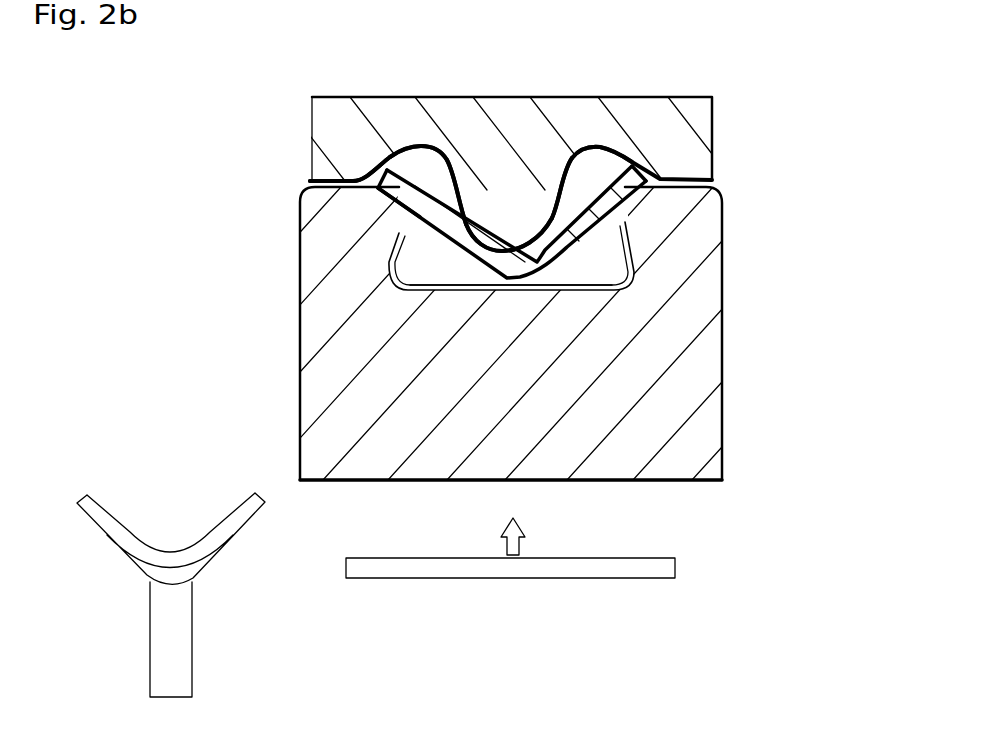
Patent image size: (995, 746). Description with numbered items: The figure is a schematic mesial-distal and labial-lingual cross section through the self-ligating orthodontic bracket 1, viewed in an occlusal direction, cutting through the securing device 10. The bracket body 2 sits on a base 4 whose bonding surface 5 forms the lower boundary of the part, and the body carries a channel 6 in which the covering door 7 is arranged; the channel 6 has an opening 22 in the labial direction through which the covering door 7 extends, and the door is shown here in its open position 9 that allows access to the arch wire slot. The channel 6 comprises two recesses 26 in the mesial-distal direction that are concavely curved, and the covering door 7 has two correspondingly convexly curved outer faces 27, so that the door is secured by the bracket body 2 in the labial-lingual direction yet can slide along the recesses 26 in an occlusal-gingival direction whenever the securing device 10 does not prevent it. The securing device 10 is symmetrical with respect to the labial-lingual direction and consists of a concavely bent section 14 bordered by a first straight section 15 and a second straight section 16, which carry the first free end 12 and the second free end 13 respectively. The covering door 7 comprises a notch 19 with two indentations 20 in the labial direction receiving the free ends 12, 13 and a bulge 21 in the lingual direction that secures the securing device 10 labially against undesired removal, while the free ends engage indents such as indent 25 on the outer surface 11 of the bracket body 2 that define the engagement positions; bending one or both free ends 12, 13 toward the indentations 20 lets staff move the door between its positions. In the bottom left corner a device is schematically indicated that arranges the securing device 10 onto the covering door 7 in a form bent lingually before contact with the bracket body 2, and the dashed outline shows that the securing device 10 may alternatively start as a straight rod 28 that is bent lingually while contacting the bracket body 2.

The orthodontic bracket 1 is at (170, 254).
The bracket body 2 is at (753, 236).
The base 4 is at (713, 470).
The bonding surface 5 is at (660, 482).
The channel 6 is at (595, 303).
The covering door 7 is at (745, 124).
The open position 9 is at (696, 163).
The securing device 10 is at (227, 528).
The outer surface 11 is at (360, 203).
The first free end 12 is at (379, 180).
The second free end 13 is at (640, 180).
The concavely bent section 14 is at (405, 292).
The first straight section 15 is at (420, 195).
The second straight section 16 is at (573, 178).
The notch 19 is at (390, 178).
The indentations 20 is at (440, 150).
The bulge 21 is at (476, 232).
The opening 22 is at (376, 232).
The indent 25 is at (350, 181).
The recesses 26 is at (360, 265).
The convexly curved outer faces 27 is at (361, 287).
The rod 28 is at (657, 563).